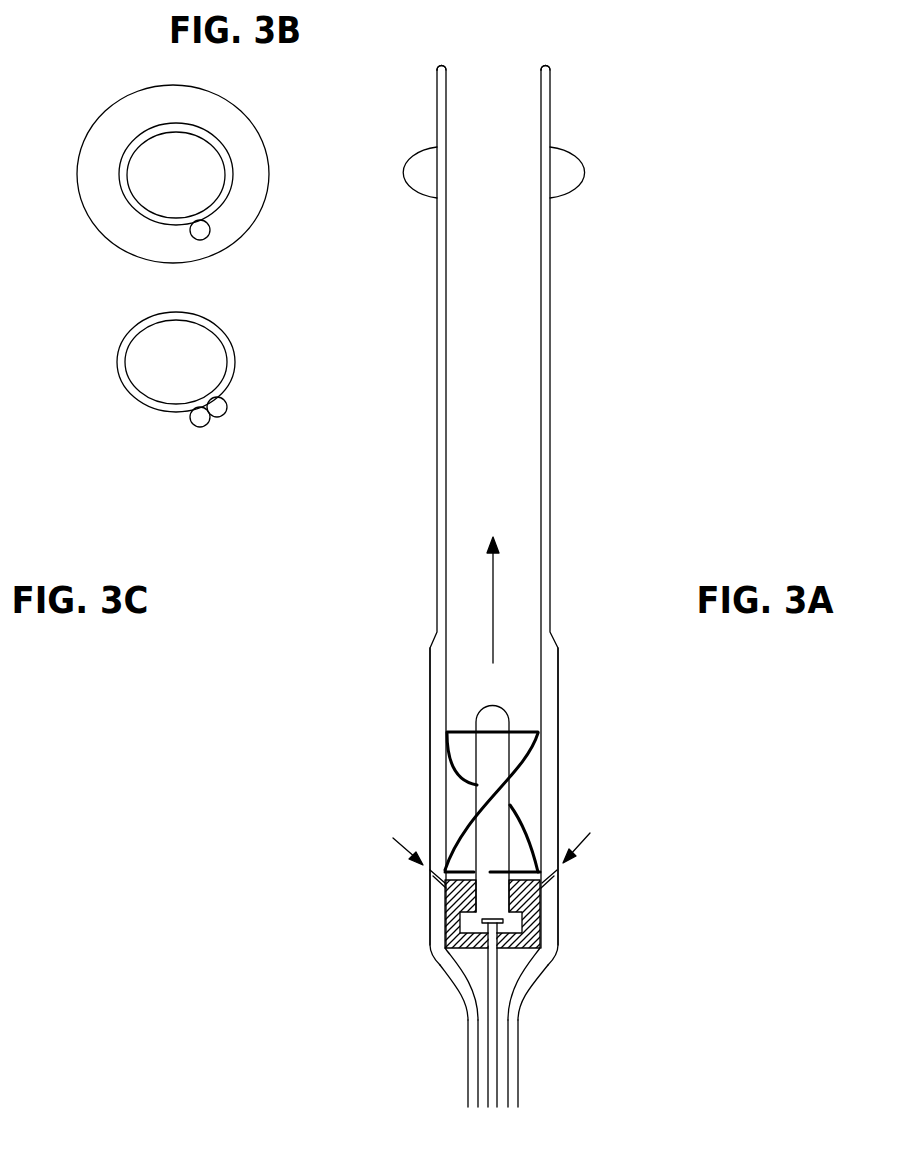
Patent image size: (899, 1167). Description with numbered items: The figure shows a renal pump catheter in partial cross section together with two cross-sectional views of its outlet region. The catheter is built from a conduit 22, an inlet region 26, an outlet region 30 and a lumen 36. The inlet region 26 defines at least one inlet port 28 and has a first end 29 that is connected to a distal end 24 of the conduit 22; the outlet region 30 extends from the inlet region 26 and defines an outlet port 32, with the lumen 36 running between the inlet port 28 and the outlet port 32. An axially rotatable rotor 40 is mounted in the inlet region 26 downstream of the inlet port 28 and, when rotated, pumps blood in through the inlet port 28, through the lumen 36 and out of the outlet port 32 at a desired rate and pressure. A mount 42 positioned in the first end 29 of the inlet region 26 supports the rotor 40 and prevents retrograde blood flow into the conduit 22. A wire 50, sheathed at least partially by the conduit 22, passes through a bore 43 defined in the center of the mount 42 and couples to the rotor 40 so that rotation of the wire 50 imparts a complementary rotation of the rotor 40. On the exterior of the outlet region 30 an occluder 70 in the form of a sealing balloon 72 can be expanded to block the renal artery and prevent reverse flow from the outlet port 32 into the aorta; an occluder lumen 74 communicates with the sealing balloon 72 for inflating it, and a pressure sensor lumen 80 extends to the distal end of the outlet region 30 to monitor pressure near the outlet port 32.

In FIG. 3A, the conduit 22 is at (518, 1060).
In FIG. 3A, the distal end of the conduit 24 is at (430, 955).
In FIG. 3A, the inlet region 26 is at (430, 753).
In FIG. 3A, the inlet port 28 is at (420, 872).
In FIG. 3A, the first end of the inlet region 29 is at (552, 952).
In FIG. 3A, the outlet region 30 is at (548, 438).
In FIG. 3C, the outlet region 30 is at (145, 407).
In FIG. 3A, the outlet port 32 is at (545, 60).
In FIG. 3B, the outlet port 32 is at (227, 155).
In FIG. 3A, the lumen 36 is at (510, 340).
In FIG. 3B, the lumen 36 is at (153, 157).
In FIG. 3A, the rotor 40 is at (485, 827).
In FIG. 3A, the mount 42 is at (455, 932).
In FIG. 3A, the bore 43 is at (471, 952).
In FIG. 3A, the wire 50 is at (490, 1062).
In FIG. 3A, the occluder 70 is at (565, 173).
In FIG. 3A, the sealing balloon 72 is at (420, 172).
In FIG. 3B, the sealing balloon 72 is at (122, 232).
In FIG. 3C, the occluder lumen 74 is at (228, 405).
In FIG. 3B, the pressure sensor lumen 80 is at (217, 232).
In FIG. 3C, the pressure sensor lumen 80 is at (202, 432).